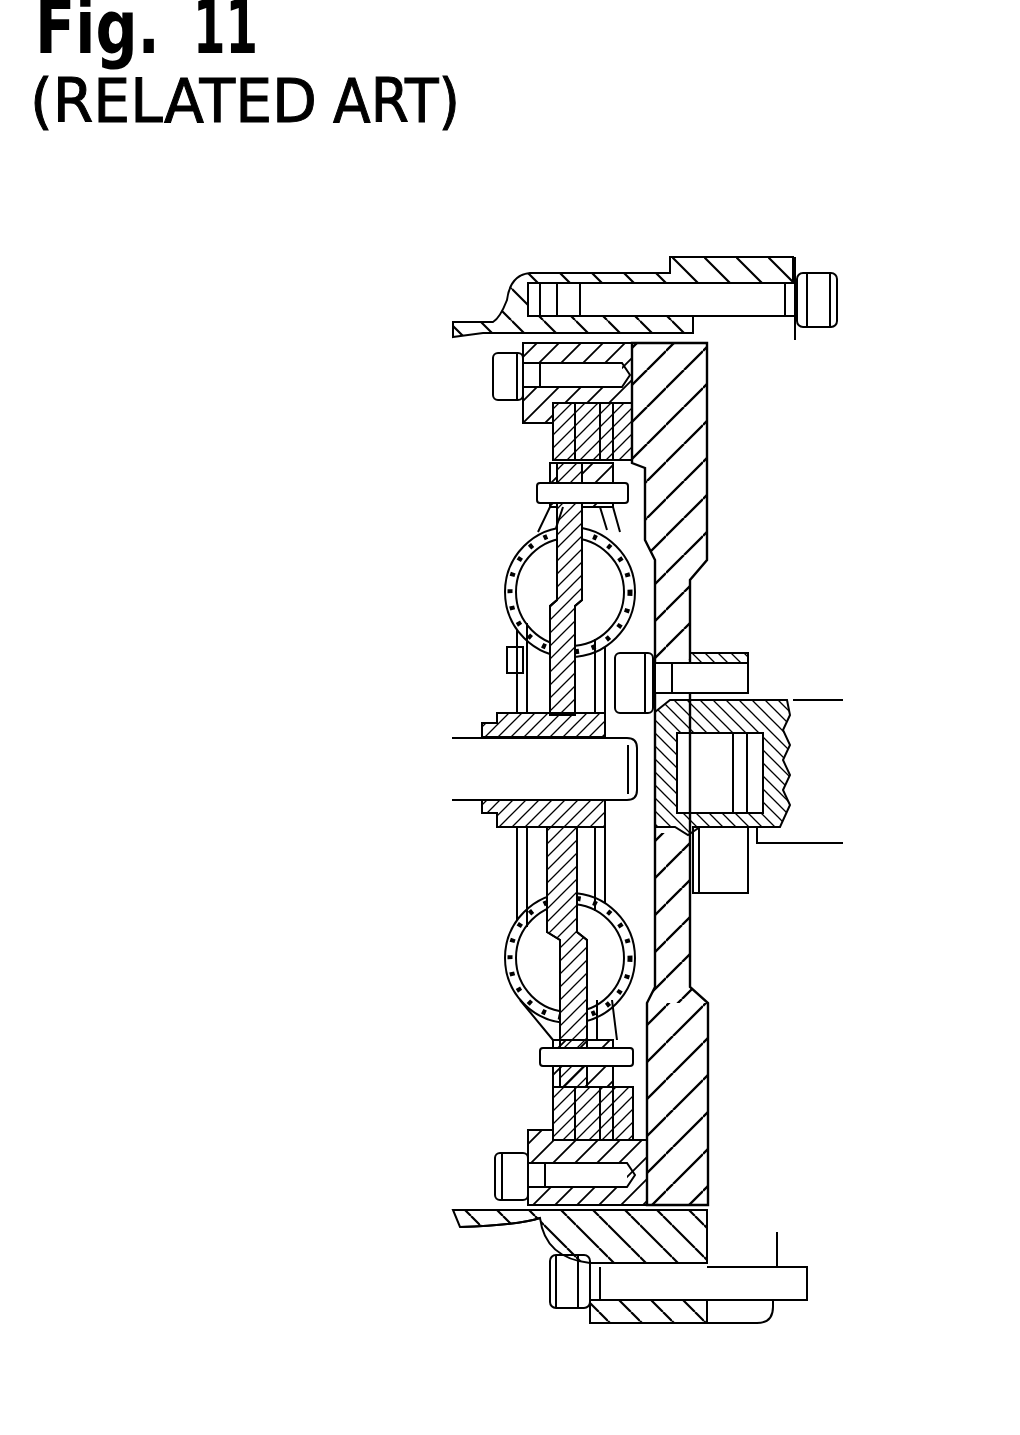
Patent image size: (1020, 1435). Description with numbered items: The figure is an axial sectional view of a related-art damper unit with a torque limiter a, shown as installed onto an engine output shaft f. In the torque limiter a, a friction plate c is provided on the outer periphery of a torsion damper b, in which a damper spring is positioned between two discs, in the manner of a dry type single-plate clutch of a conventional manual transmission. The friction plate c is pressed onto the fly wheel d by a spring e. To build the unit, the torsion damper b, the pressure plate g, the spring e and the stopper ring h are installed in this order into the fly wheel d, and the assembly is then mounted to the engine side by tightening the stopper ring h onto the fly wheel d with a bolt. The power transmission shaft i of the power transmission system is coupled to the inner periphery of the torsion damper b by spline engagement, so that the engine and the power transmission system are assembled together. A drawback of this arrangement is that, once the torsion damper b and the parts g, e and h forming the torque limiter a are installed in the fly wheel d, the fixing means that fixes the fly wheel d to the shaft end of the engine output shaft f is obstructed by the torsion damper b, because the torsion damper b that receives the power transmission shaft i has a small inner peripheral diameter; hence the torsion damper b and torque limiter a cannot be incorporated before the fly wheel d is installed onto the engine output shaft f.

The torque limiter a is at (660, 1115).
The torsion damper b is at (635, 592).
The friction plate c is at (650, 1082).
The fly wheel d is at (707, 437).
The spring e is at (553, 1113).
The engine output shaft f is at (797, 705).
The pressure plate g is at (537, 1212).
The stopper ring h is at (528, 1143).
The power transmission shaft i is at (612, 800).